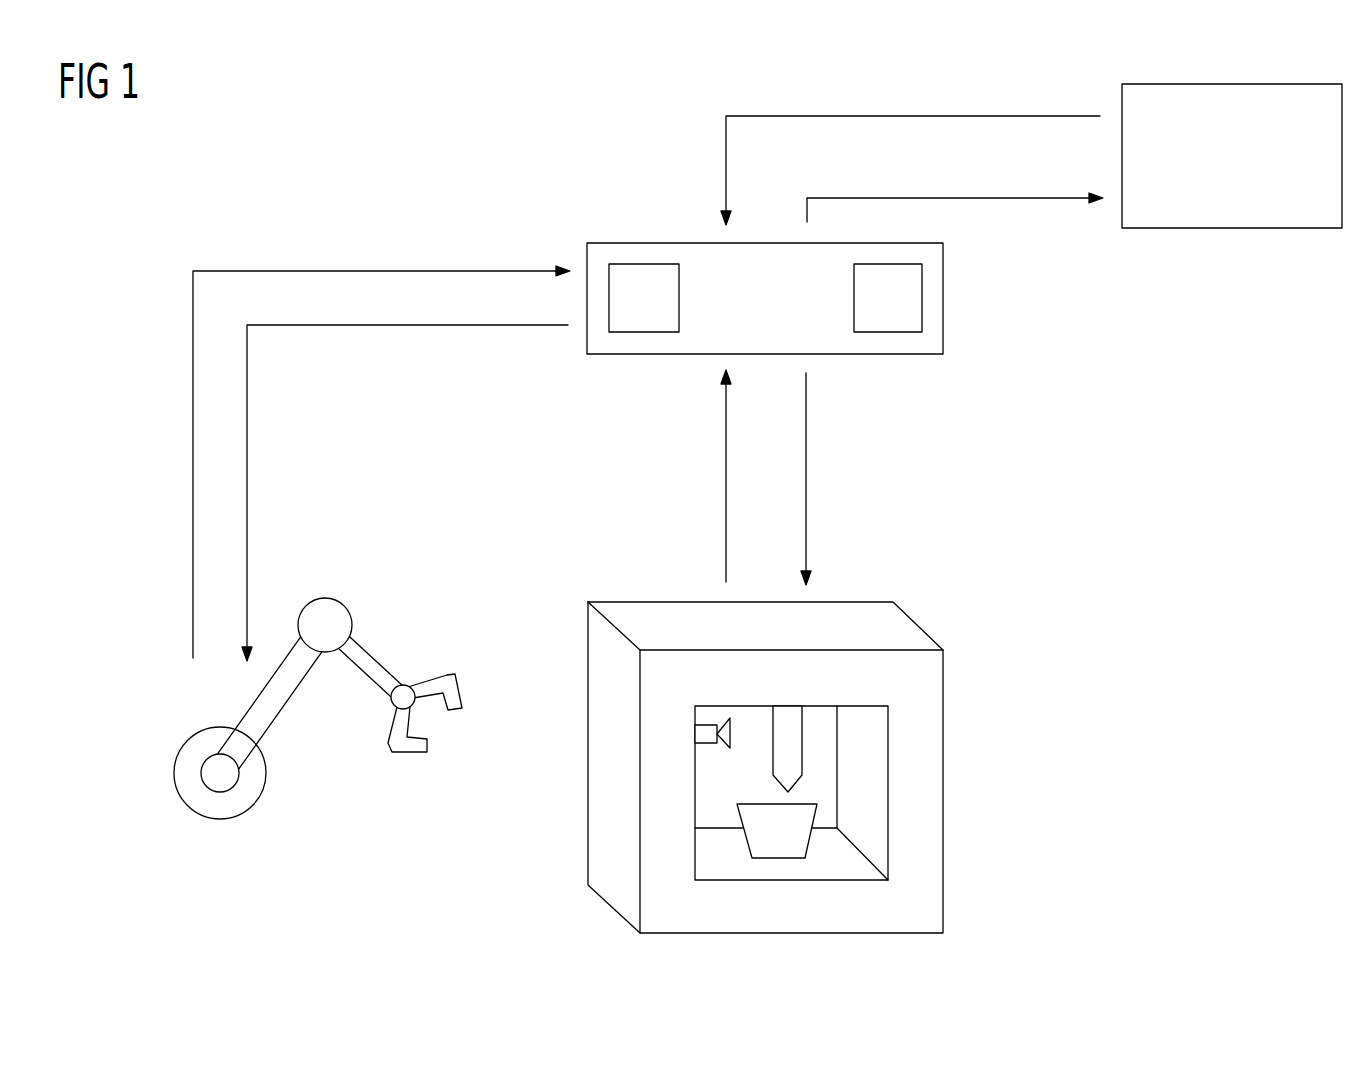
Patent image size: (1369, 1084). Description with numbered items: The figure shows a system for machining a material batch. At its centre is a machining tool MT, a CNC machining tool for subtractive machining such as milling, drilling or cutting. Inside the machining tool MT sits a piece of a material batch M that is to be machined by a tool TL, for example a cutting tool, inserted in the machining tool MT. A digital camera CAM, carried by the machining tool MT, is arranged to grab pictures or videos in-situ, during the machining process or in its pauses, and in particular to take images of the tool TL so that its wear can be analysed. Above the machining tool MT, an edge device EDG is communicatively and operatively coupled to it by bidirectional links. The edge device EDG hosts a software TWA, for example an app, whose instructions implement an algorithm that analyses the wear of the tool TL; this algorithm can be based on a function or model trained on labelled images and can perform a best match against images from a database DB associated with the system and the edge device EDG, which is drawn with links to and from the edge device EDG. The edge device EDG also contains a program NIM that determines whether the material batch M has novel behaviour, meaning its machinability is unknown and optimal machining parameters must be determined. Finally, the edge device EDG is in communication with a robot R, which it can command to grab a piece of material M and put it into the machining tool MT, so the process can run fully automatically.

The database DB is at (1247, 174).
The edge device EDG is at (790, 316).
The program NIM is at (667, 316).
The software TWA is at (913, 316).
The robot R is at (222, 819).
The machining tool MT is at (925, 681).
The tool TL is at (787, 733).
The material batch M is at (787, 841).
The camera CAM is at (705, 733).